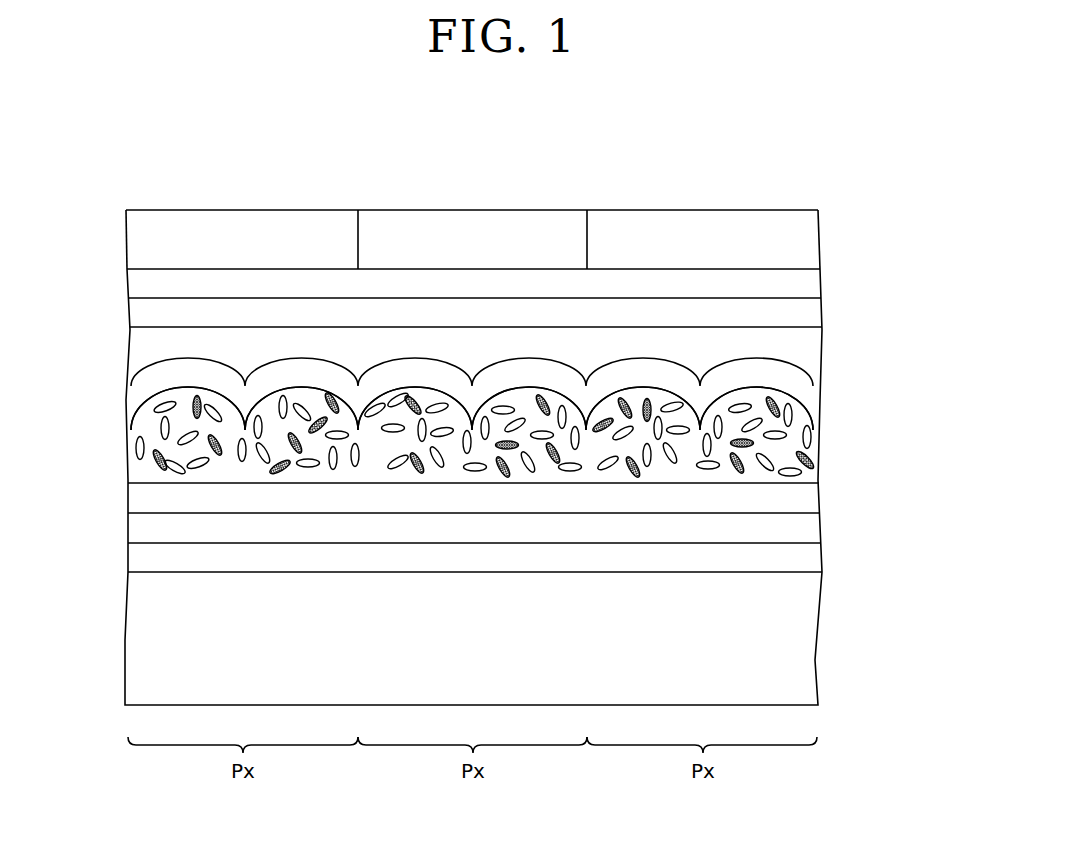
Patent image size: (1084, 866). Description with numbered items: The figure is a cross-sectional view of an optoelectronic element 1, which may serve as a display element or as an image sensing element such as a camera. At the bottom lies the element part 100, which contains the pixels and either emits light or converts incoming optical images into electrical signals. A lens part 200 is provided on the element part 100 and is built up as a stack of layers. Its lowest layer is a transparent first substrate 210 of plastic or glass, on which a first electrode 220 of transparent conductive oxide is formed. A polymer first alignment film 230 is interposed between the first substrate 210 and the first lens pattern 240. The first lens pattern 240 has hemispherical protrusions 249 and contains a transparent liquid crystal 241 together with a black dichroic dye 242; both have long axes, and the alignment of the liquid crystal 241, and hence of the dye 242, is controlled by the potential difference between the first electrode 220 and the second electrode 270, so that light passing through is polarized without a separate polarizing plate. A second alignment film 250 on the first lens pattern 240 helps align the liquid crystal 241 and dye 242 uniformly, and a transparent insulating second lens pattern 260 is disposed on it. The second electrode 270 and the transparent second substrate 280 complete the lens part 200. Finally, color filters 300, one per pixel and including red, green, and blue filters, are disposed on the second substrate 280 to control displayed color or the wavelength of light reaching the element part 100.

The optoelectronic element 1 is at (851, 124).
The element part 100 is at (140, 634).
The lens part 200 is at (103, 268).
The first substrate 210 is at (810, 556).
The first electrode 220 is at (810, 527).
The first alignment film 230 is at (810, 496).
The first lens pattern 240 is at (908, 428).
The liquid crystal 241 is at (810, 433).
The dye 242 is at (810, 460).
The protrusions 249 is at (760, 384).
The second alignment film 250 is at (810, 404).
The second lens pattern 260 is at (810, 346).
The second electrode 270 is at (808, 312).
The second substrate 280 is at (808, 283).
The color filters 300 is at (226, 251).